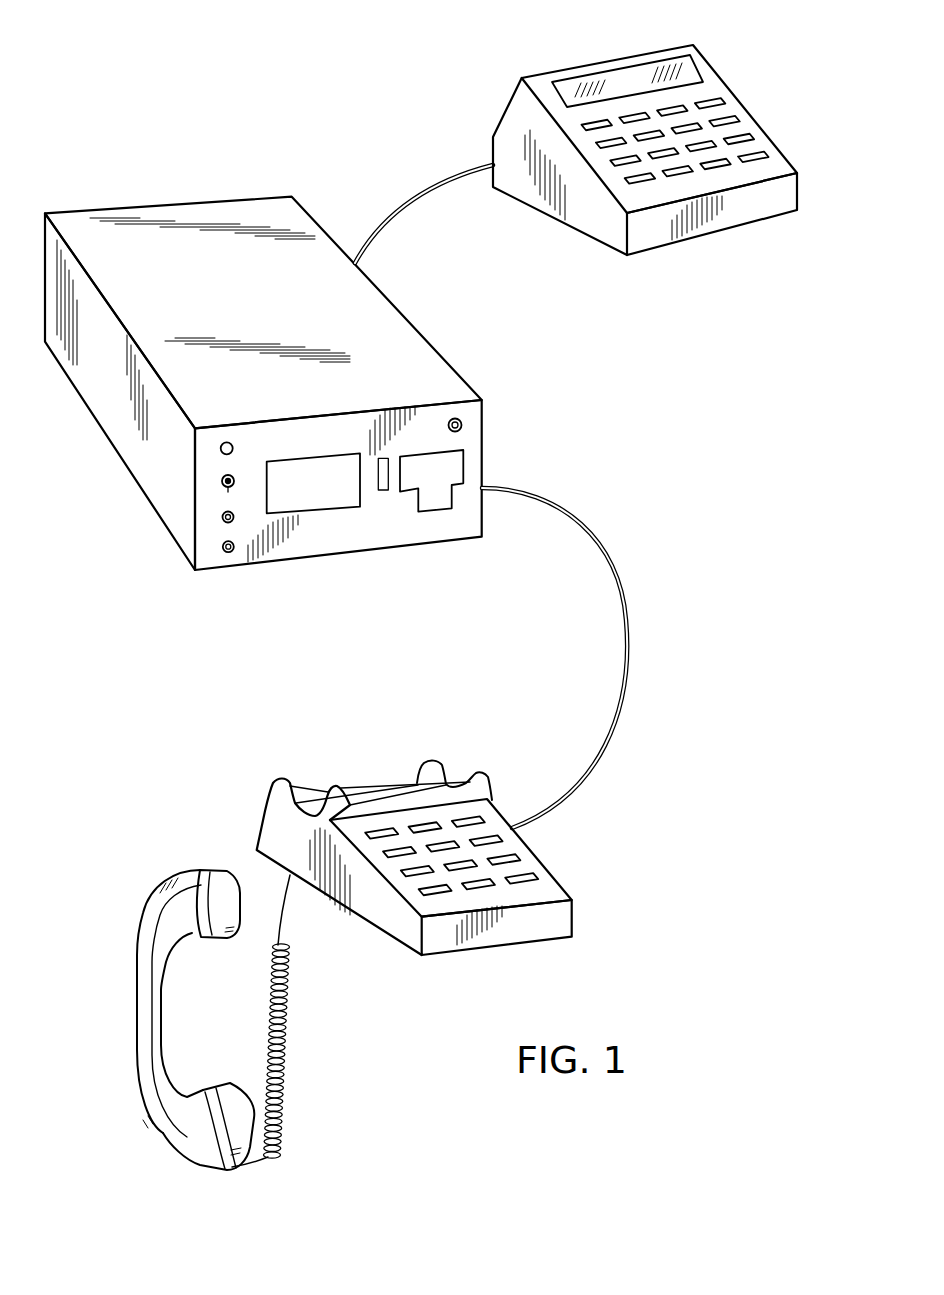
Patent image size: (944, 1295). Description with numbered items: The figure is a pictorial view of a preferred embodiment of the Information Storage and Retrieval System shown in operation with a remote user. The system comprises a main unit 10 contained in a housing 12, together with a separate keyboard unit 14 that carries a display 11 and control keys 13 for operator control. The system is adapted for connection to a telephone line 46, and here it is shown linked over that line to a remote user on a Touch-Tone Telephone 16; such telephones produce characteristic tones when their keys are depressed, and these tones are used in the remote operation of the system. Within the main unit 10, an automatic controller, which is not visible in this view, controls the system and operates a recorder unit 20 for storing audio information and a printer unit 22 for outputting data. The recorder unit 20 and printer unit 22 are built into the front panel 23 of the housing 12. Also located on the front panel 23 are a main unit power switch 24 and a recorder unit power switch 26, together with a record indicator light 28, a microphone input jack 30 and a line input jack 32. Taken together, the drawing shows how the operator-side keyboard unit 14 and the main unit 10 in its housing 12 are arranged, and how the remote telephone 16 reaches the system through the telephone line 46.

The main unit 10 is at (298, 192).
The display 11 is at (642, 72).
The housing 12 is at (130, 210).
The control keys 13 is at (725, 118).
The keyboard unit 14 is at (753, 220).
The Touch-Tone Telephone 16 is at (562, 883).
The recorder unit 20 is at (300, 502).
The printer unit 22 is at (437, 497).
The front panel 23 is at (432, 420).
The main unit power switch 24 is at (465, 422).
The recorder unit power switch 26 is at (220, 482).
The record indicator light 28 is at (220, 448).
The microphone input jack 30 is at (225, 552).
The line input jack 32 is at (220, 520).
The telephone line 46 is at (627, 588).